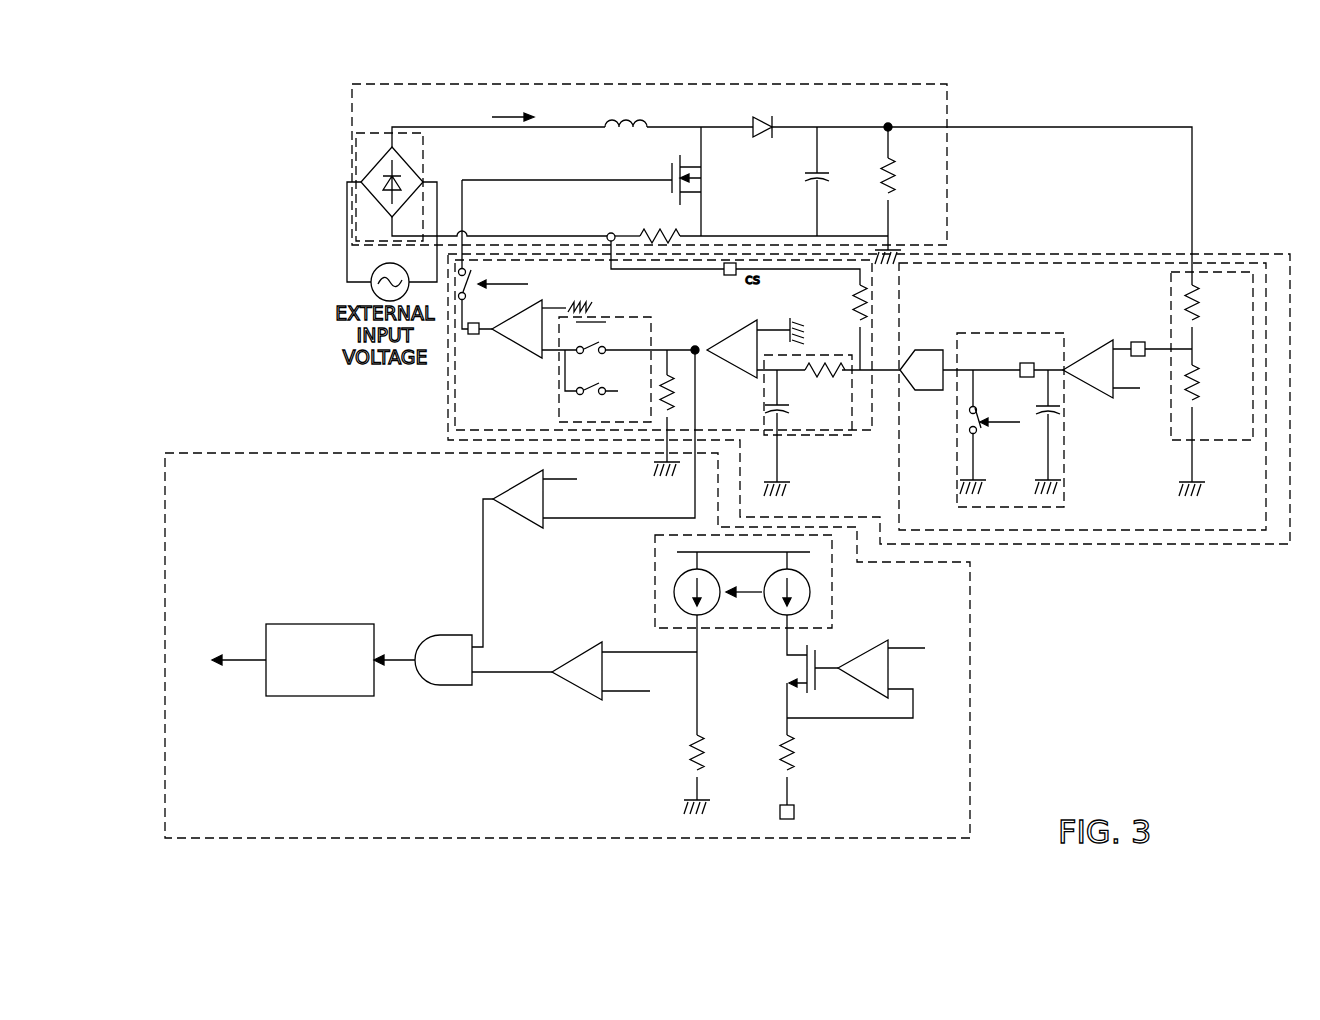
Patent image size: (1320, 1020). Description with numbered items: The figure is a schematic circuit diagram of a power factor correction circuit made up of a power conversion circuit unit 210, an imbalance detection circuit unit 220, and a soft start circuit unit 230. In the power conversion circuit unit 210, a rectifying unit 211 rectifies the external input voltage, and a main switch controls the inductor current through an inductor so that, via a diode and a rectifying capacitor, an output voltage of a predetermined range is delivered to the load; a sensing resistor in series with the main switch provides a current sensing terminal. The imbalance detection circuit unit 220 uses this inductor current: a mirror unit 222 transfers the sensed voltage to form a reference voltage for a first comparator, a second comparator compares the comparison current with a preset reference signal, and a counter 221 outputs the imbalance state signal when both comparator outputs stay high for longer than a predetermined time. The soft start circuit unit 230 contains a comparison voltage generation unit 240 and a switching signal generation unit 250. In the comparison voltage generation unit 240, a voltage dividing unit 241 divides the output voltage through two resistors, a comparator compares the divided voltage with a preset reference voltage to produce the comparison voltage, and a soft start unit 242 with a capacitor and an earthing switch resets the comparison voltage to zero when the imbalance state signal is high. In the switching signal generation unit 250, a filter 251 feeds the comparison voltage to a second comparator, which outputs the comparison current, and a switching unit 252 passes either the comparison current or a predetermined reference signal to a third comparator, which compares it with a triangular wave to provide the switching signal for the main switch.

The power conversion circuit unit 210 is at (948, 218).
The rectifying unit 211 is at (423, 151).
The imbalance detection circuit unit 220 is at (970, 675).
The counter 221 is at (318, 624).
The mirror unit 222 is at (833, 588).
The soft start circuit unit 230 is at (1050, 256).
The comparison voltage generation unit 240 is at (899, 478).
The voltage dividing unit 241 is at (1171, 292).
The soft start unit 242 is at (992, 333).
The switching signal generation unit 250 is at (815, 437).
The filter 251 is at (763, 423).
The switching unit 252 is at (559, 402).